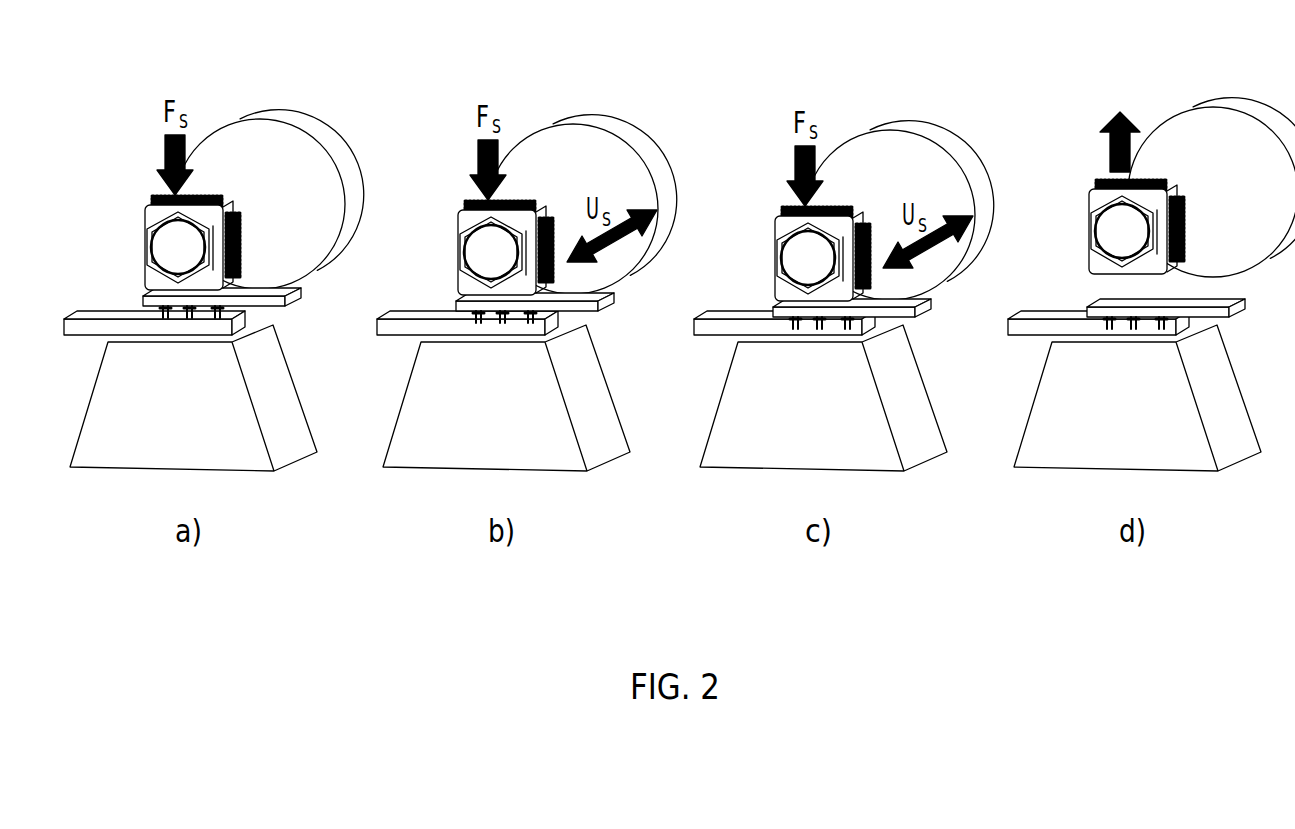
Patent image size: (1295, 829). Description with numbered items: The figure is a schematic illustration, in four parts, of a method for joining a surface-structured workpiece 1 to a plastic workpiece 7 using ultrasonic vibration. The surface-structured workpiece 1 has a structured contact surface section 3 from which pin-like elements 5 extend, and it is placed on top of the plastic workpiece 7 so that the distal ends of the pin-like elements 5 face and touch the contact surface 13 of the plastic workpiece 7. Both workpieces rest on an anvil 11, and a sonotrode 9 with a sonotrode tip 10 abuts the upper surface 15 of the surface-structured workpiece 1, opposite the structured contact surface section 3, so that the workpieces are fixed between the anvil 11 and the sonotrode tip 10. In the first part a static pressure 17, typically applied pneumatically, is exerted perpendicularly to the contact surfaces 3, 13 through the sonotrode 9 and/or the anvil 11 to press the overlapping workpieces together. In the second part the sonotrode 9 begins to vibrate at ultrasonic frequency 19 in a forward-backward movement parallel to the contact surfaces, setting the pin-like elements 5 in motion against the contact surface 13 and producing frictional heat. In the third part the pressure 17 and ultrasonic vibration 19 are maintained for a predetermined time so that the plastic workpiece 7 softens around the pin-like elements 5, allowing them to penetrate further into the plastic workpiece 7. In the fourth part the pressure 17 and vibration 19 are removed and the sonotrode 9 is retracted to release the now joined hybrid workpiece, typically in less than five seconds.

The surface-structured workpiece 1 is at (785, 317).
The structured contact surface section 3 is at (701, 334).
The pin-like elements 5 is at (717, 353).
The plastic workpiece 7 is at (615, 354).
The sonotrode 9 is at (735, 176).
The sonotrode tip 10 is at (632, 240).
The anvil 11 is at (665, 398).
The contact surface 13 is at (626, 294).
The upper surface 15 is at (694, 289).
The static pressure 17 is at (625, 150).
The ultrasonic vibration 19 is at (786, 247).